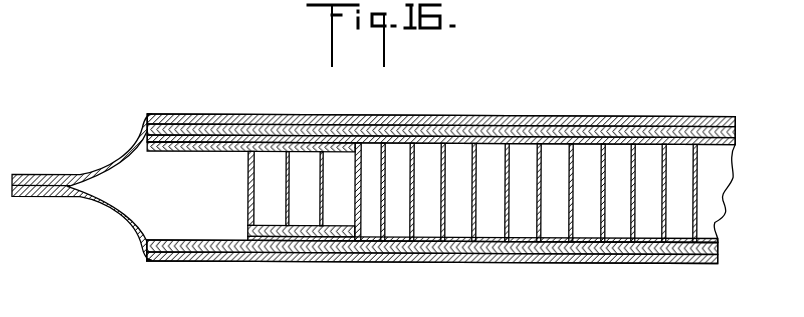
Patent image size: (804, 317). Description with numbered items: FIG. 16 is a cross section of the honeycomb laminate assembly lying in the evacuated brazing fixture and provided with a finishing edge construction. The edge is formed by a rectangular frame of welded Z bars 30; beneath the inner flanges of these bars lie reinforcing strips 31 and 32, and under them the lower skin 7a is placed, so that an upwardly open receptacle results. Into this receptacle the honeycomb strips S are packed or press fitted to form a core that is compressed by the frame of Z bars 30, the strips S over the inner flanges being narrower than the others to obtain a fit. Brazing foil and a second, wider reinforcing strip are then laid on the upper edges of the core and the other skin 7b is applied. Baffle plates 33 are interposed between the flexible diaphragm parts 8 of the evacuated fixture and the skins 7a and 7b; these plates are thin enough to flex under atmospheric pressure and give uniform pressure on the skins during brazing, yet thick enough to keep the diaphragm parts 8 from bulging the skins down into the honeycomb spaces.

The skin 7a is at (561, 241).
The skin 7b is at (603, 141).
The flexible diaphragm part 8 is at (675, 121).
The baffle plate 33 is at (455, 130).
The reinforcing strip 32 is at (268, 139).
The Z bar 30 is at (248, 185).
The reinforcing strip 31 is at (275, 231).
The strip S is at (568, 156).